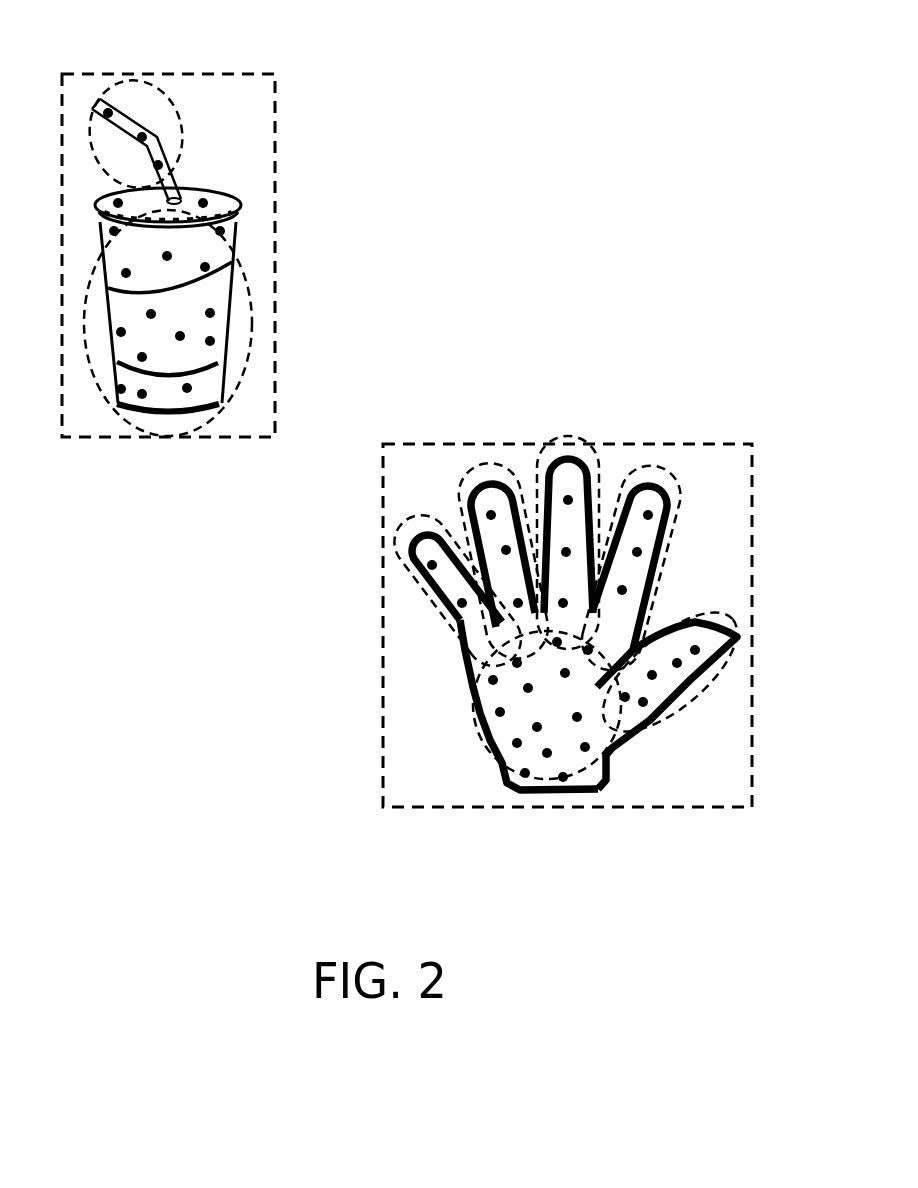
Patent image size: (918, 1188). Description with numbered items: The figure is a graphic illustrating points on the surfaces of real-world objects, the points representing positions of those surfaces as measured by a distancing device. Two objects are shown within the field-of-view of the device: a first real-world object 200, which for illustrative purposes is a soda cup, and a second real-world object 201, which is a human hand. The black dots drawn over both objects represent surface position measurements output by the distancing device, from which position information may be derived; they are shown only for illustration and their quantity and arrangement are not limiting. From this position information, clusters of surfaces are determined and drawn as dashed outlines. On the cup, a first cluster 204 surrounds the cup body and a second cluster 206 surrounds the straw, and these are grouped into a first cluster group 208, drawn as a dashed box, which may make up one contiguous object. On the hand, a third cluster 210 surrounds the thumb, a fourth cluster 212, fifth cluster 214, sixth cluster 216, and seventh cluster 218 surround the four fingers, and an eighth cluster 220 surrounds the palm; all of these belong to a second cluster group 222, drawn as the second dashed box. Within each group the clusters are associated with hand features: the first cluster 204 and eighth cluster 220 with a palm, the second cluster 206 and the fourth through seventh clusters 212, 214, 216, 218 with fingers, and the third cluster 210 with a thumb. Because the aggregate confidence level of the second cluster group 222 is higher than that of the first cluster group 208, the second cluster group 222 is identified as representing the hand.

The first real-world object 200 is at (398, 124).
The second real-world object 201 is at (655, 349).
The first cluster 204 is at (251, 300).
The second cluster 206 is at (157, 93).
The first cluster group 208 is at (275, 75).
The third cluster 210 is at (735, 622).
The fourth cluster 212 is at (665, 462).
The fifth cluster 214 is at (560, 458).
The sixth cluster 216 is at (477, 475).
The seventh cluster 218 is at (405, 597).
The eighth cluster 220 is at (620, 755).
The second cluster group 222 is at (383, 752).